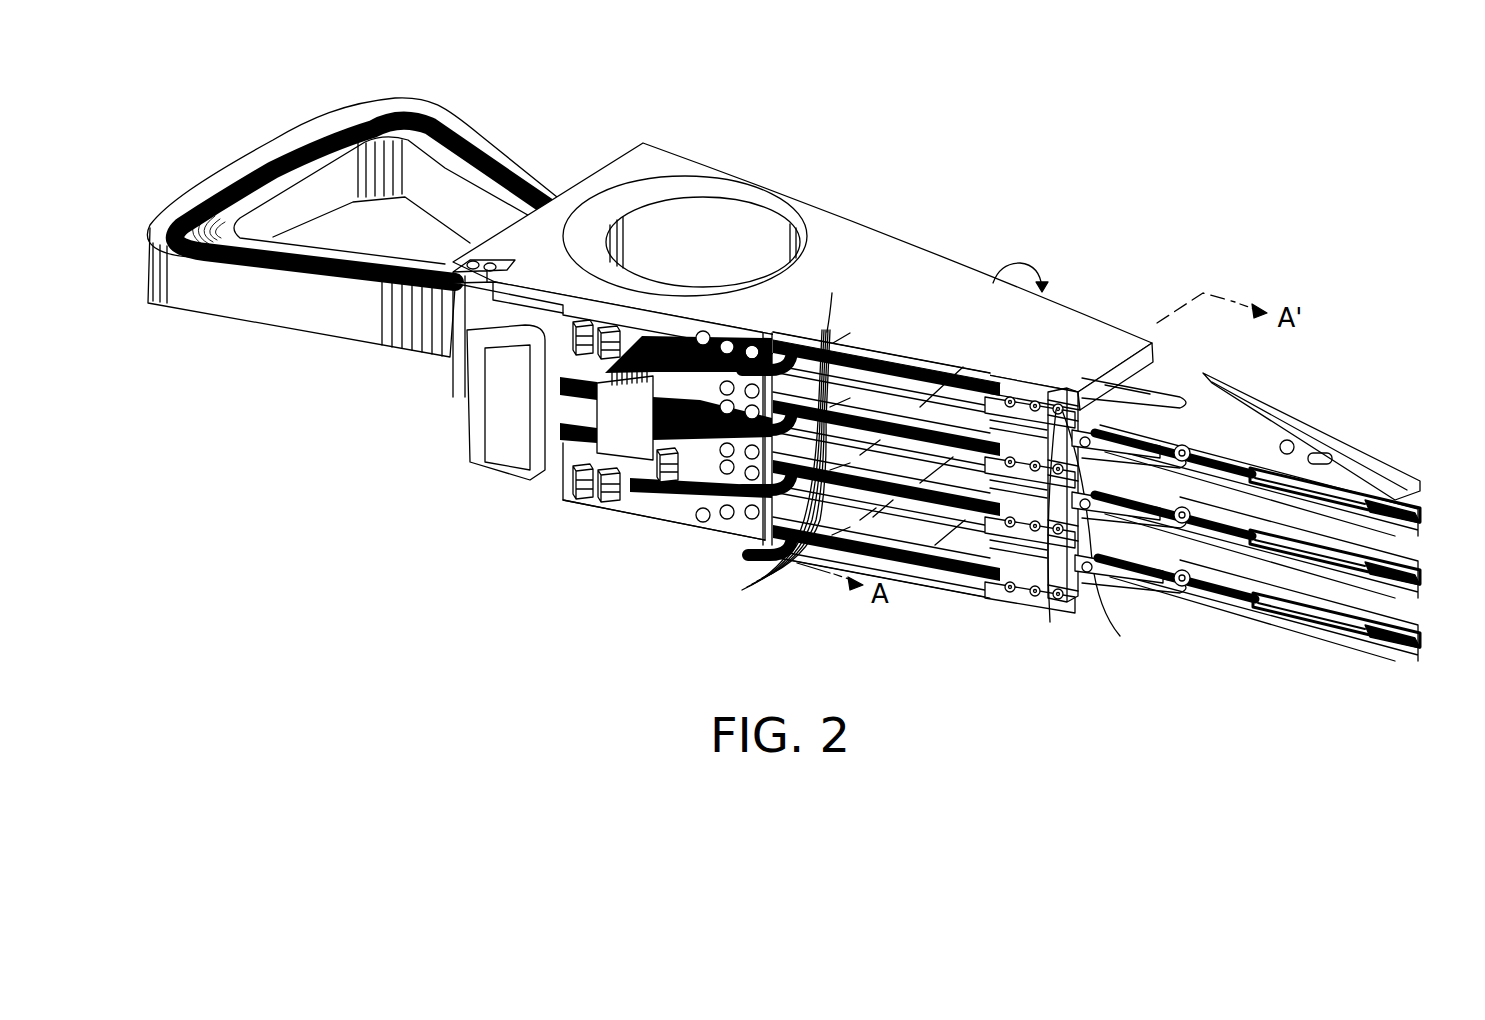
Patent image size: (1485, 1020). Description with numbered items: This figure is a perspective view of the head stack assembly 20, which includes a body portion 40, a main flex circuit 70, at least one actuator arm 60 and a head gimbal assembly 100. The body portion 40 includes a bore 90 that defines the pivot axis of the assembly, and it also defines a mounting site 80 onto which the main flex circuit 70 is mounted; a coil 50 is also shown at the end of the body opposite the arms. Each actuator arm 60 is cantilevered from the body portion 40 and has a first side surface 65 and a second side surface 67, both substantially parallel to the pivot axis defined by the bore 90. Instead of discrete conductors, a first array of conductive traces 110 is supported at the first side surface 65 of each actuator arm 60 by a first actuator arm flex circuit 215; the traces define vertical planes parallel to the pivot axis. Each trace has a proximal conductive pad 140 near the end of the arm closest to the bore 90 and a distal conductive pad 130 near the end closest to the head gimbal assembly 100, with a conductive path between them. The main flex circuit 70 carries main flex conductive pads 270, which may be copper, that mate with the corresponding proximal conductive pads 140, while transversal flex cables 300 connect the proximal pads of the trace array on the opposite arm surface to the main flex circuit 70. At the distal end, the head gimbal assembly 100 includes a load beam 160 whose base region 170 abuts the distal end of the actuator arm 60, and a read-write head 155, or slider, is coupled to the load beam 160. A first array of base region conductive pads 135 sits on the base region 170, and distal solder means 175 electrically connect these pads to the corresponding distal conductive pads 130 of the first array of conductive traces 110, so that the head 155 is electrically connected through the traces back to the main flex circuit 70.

The head stack assembly 20 is at (293, 485).
The body portion 40 is at (822, 197).
The voice coil 50 is at (467, 140).
The actuator arm 60 is at (766, 465).
The first side surface 65 is at (876, 352).
The second side surface 67 is at (993, 283).
The main flex circuit 70 is at (623, 507).
The mounting site 80 is at (660, 519).
The bore 90 is at (695, 243).
The head gimbal assembly 100 is at (1272, 540).
The first array of conductive traces 110 is at (955, 372).
The distal conductive pad 130 is at (1058, 590).
The first array of base region conductive pads 135 is at (955, 570).
The proximal conductive pad 140 is at (750, 343).
The read-write head 155 is at (1363, 655).
The load beam 160 is at (1290, 410).
The base region 170 is at (1173, 355).
The distal solder means 175 is at (1111, 532).
The first actuator arm flex circuit 215 is at (830, 295).
The main flex conductive pads 270 is at (725, 522).
The transversal flex cables 300 is at (793, 346).